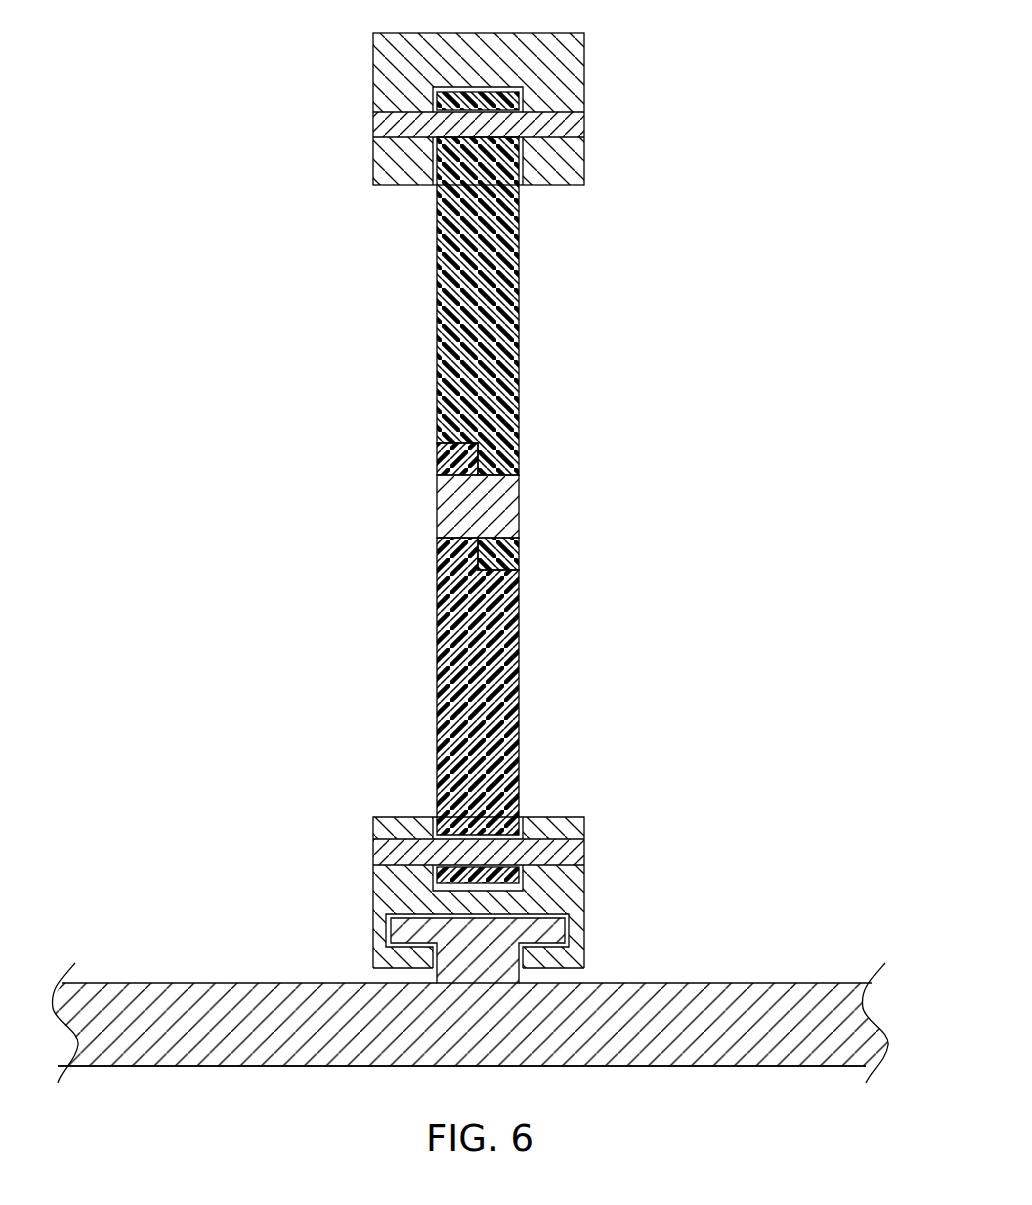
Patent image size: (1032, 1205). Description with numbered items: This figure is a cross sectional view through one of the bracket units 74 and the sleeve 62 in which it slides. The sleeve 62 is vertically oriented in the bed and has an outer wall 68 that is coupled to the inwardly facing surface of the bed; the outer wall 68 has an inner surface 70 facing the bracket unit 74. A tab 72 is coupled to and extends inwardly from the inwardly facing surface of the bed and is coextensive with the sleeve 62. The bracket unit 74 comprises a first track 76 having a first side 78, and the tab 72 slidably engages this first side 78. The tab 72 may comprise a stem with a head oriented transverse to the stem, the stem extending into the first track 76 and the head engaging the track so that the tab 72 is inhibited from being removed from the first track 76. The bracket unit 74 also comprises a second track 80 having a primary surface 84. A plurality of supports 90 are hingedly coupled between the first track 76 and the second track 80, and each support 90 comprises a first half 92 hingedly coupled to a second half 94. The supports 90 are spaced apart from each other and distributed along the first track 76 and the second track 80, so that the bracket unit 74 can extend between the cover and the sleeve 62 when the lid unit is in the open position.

The sleeve 62 is at (333, 1066).
The outer wall 68 is at (220, 1066).
The inner surface 70 is at (225, 983).
The tab 72 is at (530, 912).
The bracket unit 74 is at (693, 192).
The first track 76 is at (585, 817).
The first side 78 is at (413, 968).
The second track 80 is at (373, 33).
The primary surface 84 is at (545, 185).
The support 90 is at (519, 412).
The first half 92 is at (437, 670).
The second half 94 is at (437, 342).